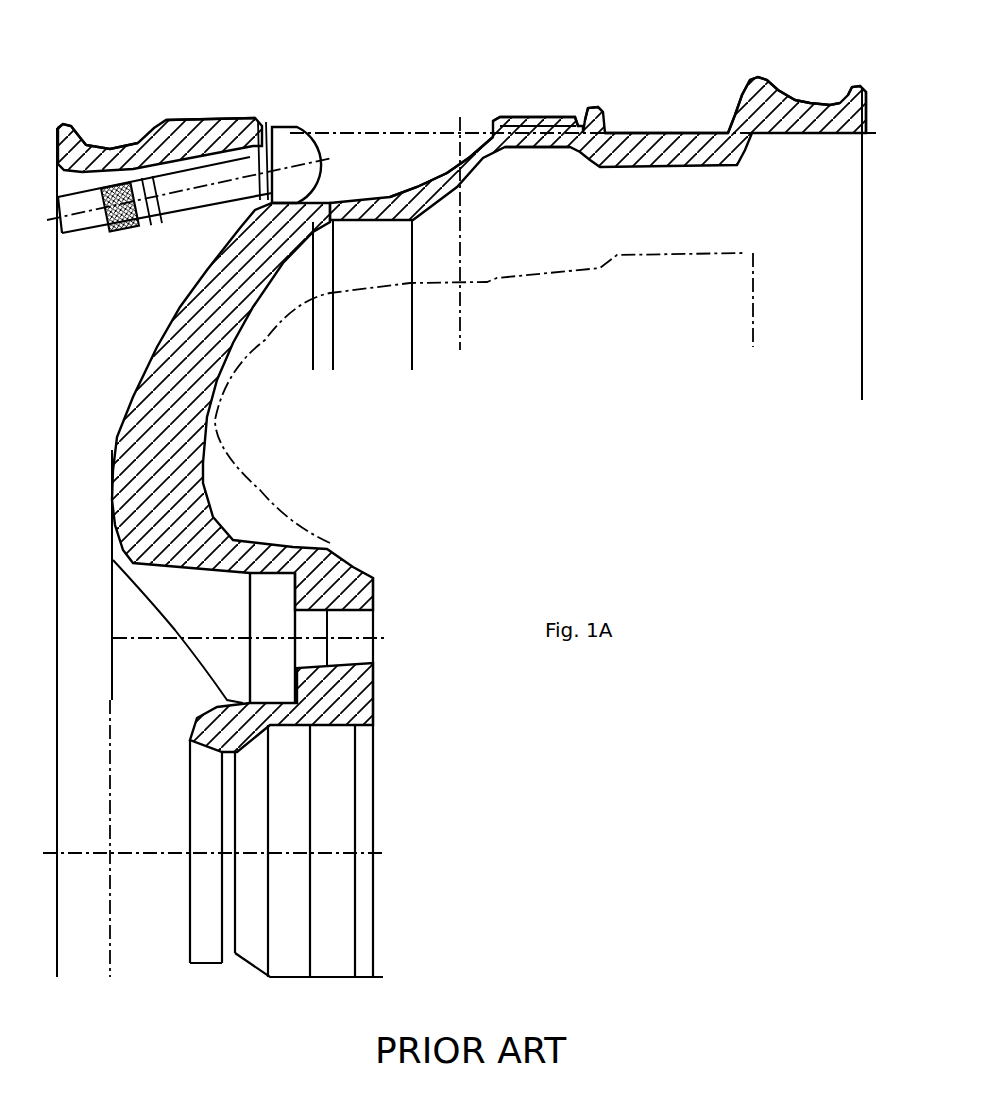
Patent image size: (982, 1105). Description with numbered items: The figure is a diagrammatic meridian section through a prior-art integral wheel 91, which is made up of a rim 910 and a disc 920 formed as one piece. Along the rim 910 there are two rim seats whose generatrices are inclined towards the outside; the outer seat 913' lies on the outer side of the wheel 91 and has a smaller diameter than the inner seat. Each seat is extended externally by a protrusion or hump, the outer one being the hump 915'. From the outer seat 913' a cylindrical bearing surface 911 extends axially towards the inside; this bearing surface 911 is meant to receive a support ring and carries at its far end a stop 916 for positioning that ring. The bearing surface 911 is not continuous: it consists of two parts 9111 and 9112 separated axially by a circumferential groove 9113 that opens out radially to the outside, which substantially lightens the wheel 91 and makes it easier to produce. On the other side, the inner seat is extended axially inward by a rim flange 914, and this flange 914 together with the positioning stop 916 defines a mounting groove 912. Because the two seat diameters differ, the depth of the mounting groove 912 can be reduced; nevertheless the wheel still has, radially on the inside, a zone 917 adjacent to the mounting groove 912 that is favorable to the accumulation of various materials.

The integral wheel 91 is at (595, 441).
The rim 910 is at (196, 80).
The bearing surface 911 is at (449, 76).
The first part of the bearing surface 9111 is at (227, 118).
The second part of the bearing surface 9112 is at (555, 119).
The circumferential groove 9113 is at (365, 186).
The mounting groove 912 is at (665, 148).
The outer rim seat 913' is at (114, 105).
The rim flange 914 is at (752, 80).
The hump 915' is at (50, 109).
The positioning stop 916 is at (598, 108).
The zone favorable to accumulation of materials 917 is at (545, 150).
The disc 920 is at (180, 418).